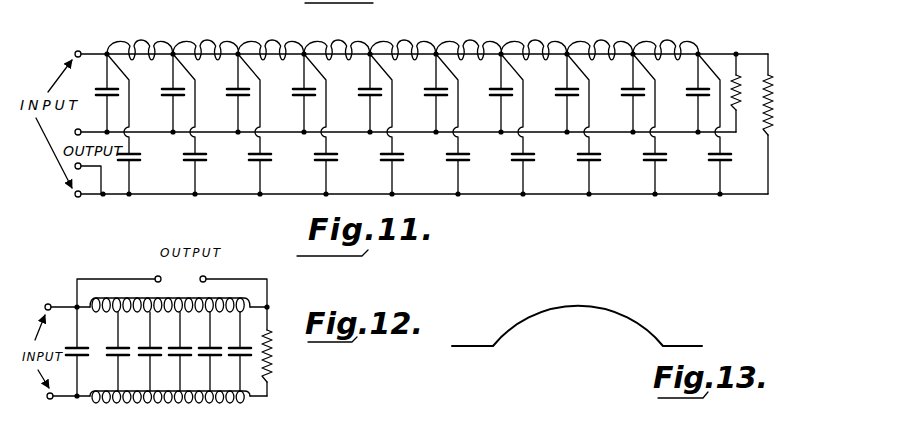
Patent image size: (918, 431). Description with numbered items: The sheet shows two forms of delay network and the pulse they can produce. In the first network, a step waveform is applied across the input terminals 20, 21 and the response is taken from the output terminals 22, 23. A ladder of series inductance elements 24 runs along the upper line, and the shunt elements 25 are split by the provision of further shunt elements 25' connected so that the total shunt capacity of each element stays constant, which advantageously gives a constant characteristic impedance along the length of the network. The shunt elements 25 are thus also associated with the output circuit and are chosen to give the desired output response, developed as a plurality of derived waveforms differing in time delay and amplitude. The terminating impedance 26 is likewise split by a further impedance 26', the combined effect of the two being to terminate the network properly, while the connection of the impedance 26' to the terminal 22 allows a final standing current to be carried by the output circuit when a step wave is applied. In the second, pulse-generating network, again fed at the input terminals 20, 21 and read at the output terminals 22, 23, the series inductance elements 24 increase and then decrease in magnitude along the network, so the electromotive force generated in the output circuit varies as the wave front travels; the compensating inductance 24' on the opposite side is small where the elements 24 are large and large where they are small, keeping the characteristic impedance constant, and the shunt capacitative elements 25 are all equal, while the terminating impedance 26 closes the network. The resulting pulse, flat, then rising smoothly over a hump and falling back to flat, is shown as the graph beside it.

In FIG. 11, the input terminal 20 is at (76, 52).
In FIG. 12, the input terminal 20 is at (48, 303).
In FIG. 11, the input terminal 21 is at (76, 198).
In FIG. 12, the input terminal 21 is at (51, 400).
In FIG. 11, the output terminal 22 is at (76, 131).
In FIG. 12, the output terminal 22 is at (156, 277).
In FIG. 11, the output terminal 23 is at (75, 167).
In FIG. 12, the output terminal 23 is at (206, 280).
In FIG. 11, the series inductance element 24 is at (403, 35).
In FIG. 12, the series inductance element 24 is at (170, 296).
In FIG. 12, the extra inductance on the opposite side of the network 24' is at (170, 410).
In FIG. 11, the shunt capacitative element 25 is at (402, 93).
In FIG. 12, the shunt capacitative element 25 is at (158, 351).
In FIG. 11, the split shunt element 25' is at (419, 124).
In FIG. 11, the terminating impedance 26 is at (781, 124).
In FIG. 12, the terminating impedance 26 is at (284, 351).
In FIG. 11, the split terminating impedance 26' is at (745, 109).